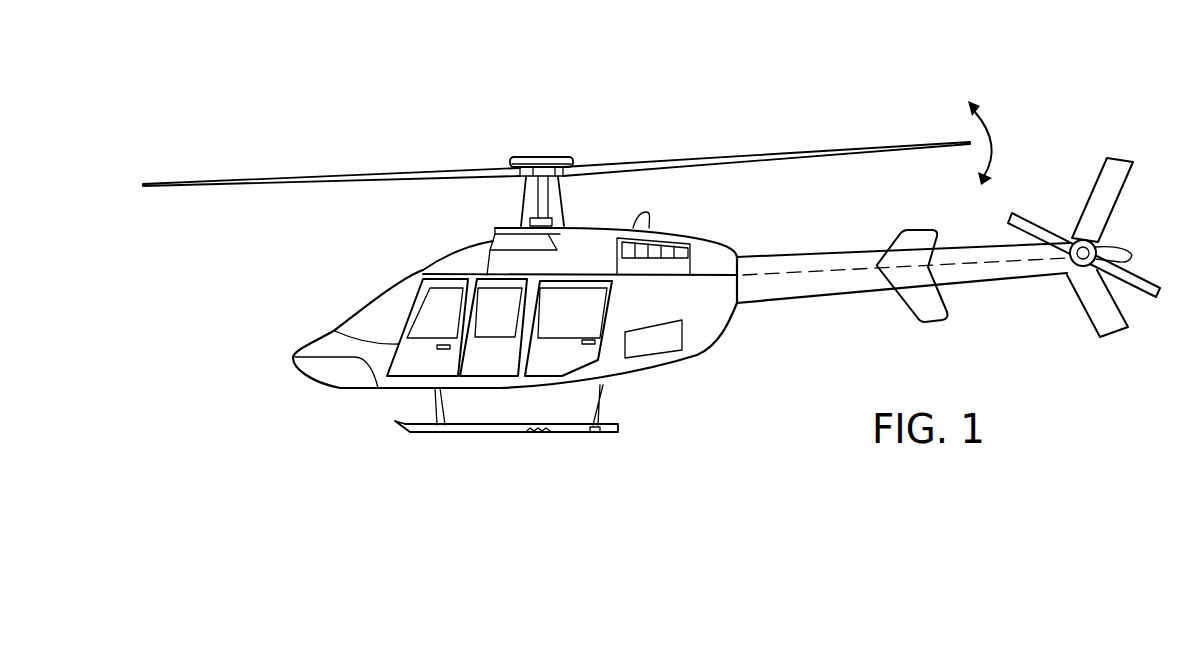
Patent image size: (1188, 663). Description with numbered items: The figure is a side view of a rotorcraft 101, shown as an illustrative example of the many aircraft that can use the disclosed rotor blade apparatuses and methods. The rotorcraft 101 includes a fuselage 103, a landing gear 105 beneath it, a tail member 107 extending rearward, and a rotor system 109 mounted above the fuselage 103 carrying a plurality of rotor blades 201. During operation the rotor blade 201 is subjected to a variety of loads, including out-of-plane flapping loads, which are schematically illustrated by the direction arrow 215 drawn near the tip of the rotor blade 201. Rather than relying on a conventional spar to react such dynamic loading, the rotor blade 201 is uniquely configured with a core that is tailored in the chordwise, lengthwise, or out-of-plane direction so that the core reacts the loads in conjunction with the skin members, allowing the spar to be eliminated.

The rotorcraft 101 is at (388, 108).
The fuselage 103 is at (335, 386).
The landing gear 105 is at (487, 433).
The tail member 107 is at (817, 302).
The rotor system 109 is at (543, 157).
The rotor blade 201 is at (757, 154).
The direction arrow 215 is at (1000, 140).